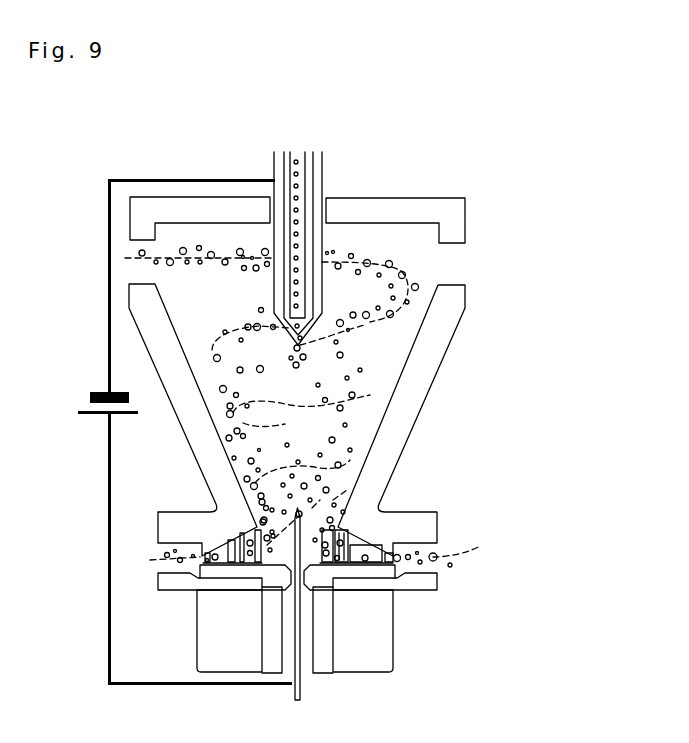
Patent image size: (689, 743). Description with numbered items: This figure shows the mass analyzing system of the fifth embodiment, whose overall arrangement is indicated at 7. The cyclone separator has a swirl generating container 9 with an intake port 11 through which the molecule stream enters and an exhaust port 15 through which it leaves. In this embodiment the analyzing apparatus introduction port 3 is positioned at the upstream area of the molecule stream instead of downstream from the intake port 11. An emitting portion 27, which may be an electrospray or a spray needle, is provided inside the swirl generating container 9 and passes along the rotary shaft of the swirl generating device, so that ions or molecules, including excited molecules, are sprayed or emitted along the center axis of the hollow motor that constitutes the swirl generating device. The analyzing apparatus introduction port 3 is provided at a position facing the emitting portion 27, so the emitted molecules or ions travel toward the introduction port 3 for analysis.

The analyzing apparatus introduction port 3 is at (278, 168).
The spray apparatus 7 is at (368, 177).
The swirl generating container 9 is at (395, 422).
The intake port 11 is at (450, 268).
The exhaust port 15 is at (443, 558).
The emitting portion 27 is at (302, 678).